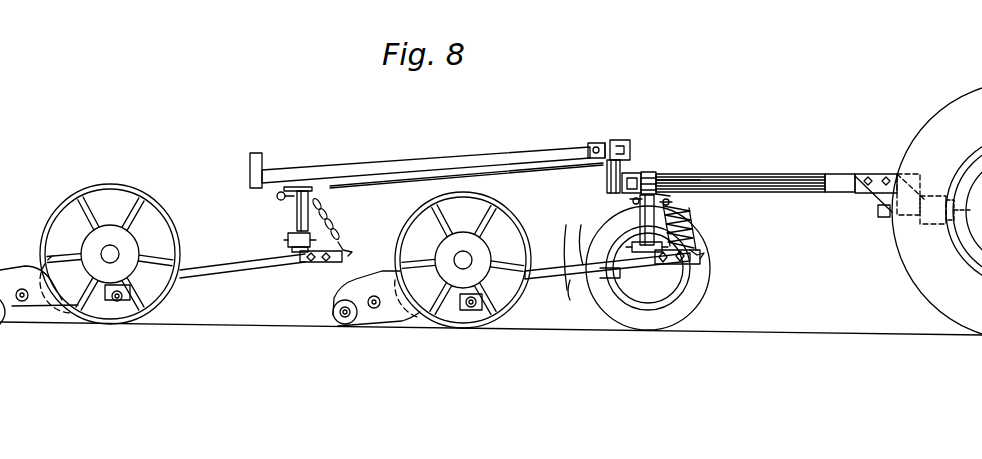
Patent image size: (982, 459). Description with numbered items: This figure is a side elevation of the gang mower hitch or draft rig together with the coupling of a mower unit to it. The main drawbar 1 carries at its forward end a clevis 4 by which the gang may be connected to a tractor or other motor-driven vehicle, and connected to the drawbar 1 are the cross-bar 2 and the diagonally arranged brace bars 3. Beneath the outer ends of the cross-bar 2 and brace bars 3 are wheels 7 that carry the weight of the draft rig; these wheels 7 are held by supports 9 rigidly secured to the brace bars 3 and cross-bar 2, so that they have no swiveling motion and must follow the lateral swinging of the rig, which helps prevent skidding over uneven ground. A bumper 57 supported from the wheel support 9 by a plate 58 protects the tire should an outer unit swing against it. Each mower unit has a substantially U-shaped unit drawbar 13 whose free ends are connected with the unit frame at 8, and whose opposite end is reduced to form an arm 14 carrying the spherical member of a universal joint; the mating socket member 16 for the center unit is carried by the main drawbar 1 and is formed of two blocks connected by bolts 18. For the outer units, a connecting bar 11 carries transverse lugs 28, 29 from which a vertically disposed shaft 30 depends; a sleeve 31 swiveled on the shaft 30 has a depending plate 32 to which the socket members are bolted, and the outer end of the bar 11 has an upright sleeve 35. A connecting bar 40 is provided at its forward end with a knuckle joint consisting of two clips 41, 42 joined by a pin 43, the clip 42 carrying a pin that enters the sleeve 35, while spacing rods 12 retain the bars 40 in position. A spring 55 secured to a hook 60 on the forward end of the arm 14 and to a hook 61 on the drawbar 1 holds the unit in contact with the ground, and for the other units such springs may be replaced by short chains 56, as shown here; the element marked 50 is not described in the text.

The drawbar 1 is at (838, 172).
The cross-bar 2 is at (636, 173).
The brace bars 3 is at (760, 174).
The clevis 4 is at (922, 226).
The wheels 7 is at (700, 262).
The connection of unit drawbar to unit frame 8 is at (475, 305).
The wheel supports 9 is at (634, 205).
The connecting bars 11 is at (606, 184).
The spacing rods 12 is at (530, 180).
The unit drawbar 13 is at (565, 298).
The arm 14 is at (688, 273).
The socket member 16 is at (303, 262).
The bolts 18 is at (288, 241).
The transverse lug 28 is at (655, 174).
The transverse lug 29 is at (664, 195).
The shaft 30 is at (664, 184).
The sleeve 31 is at (298, 216).
The depending plate 32 is at (292, 250).
The upright sleeve 35 is at (608, 190).
The connecting bars 40 is at (433, 158).
The clip 41 is at (596, 143).
The clip 42 is at (620, 140).
The pin 43 is at (602, 145).
The end plate 50 is at (250, 160).
The spring 55 is at (697, 234).
The short chains 56 is at (344, 213).
The bumper 57 is at (556, 254).
The plate 58 is at (583, 241).
The hook 60 is at (352, 250).
The hook 61 is at (318, 197).